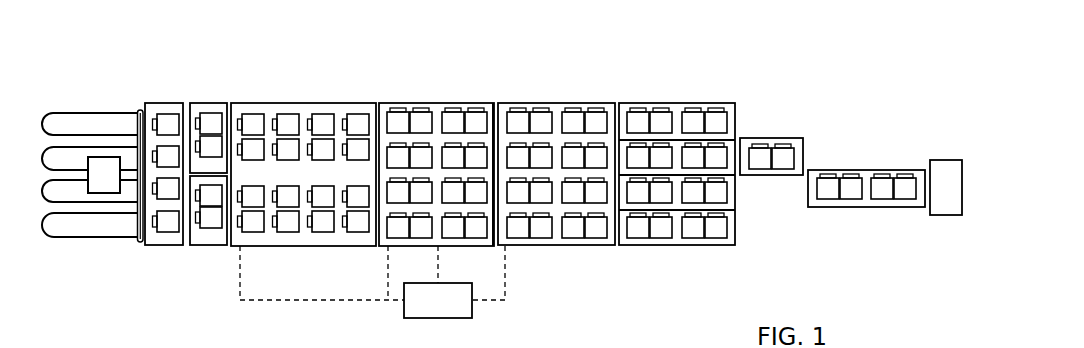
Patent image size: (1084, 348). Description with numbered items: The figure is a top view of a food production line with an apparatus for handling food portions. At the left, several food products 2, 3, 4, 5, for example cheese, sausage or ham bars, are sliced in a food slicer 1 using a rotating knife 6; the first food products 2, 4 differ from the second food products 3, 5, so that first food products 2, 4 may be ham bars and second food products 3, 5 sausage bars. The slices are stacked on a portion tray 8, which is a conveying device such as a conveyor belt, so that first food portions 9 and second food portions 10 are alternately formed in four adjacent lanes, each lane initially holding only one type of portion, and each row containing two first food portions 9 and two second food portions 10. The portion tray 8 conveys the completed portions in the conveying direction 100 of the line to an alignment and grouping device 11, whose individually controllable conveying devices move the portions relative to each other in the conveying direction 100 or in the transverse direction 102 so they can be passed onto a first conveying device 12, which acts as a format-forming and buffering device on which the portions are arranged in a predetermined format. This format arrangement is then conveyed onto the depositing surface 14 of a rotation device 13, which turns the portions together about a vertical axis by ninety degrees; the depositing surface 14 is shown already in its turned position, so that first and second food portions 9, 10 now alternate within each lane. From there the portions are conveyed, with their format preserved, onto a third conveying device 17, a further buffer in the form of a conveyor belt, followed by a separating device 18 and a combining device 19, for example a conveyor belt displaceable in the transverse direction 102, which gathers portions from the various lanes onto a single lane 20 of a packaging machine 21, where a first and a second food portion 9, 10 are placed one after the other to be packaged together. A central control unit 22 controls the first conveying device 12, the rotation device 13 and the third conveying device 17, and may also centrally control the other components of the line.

The food slicer 1 is at (92, 165).
The first food product 2 is at (61, 118).
The second food product 3 is at (80, 150).
The first food product 4 is at (80, 198).
The second food product 5 is at (62, 230).
The rotating knife 6 is at (141, 112).
The portion tray 8 is at (166, 99).
The first food portion 9 is at (535, 173).
The second food portion 10 is at (523, 173).
The alignment and grouping device 11 is at (209, 99).
The first conveying device 12 is at (305, 99).
The rotation device 13 is at (440, 99).
The depositing surface 14 is at (491, 103).
The third conveying device 17 is at (560, 99).
The separating device 18 is at (680, 99).
The combining device 19 is at (758, 134).
The single lane 20 is at (868, 166).
The packaging machine 21 is at (947, 156).
The central control unit 22 is at (430, 308).
The conveying direction 100 is at (214, 275).
The transverse direction 102 is at (778, 37).